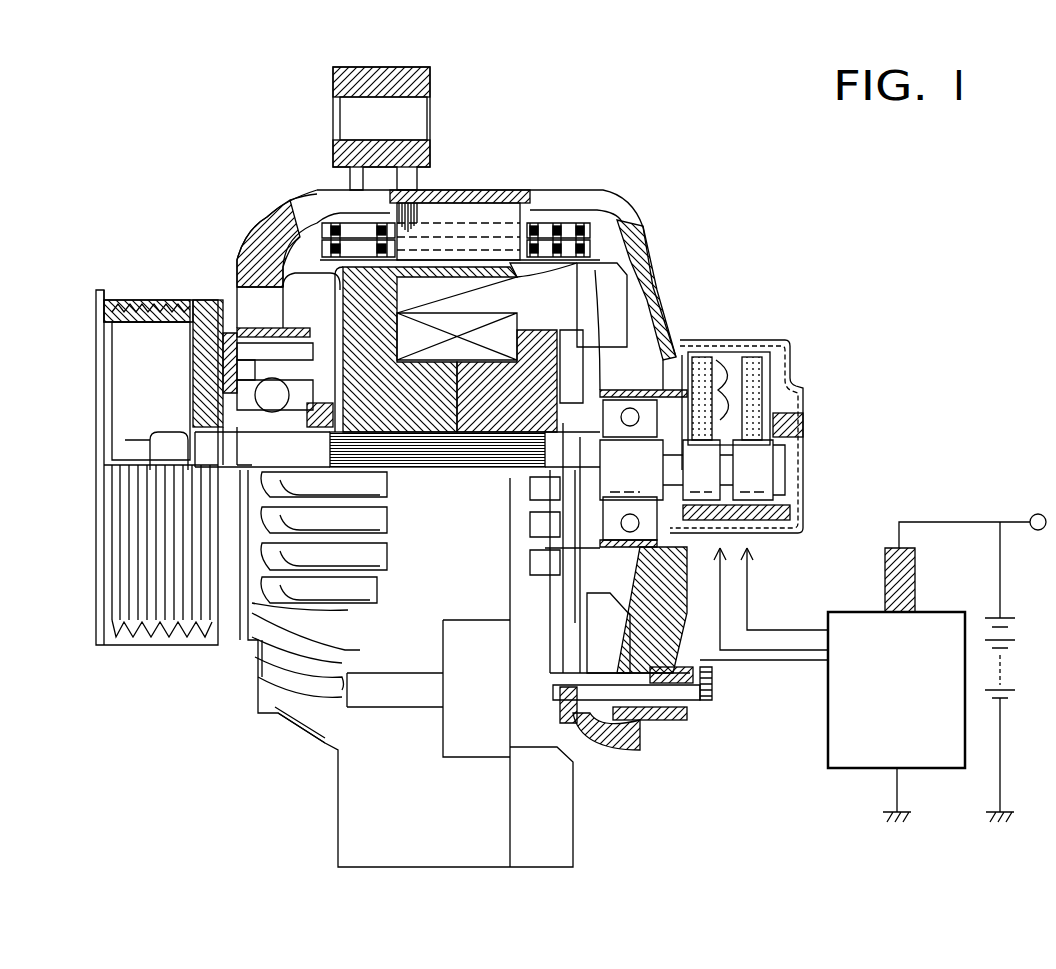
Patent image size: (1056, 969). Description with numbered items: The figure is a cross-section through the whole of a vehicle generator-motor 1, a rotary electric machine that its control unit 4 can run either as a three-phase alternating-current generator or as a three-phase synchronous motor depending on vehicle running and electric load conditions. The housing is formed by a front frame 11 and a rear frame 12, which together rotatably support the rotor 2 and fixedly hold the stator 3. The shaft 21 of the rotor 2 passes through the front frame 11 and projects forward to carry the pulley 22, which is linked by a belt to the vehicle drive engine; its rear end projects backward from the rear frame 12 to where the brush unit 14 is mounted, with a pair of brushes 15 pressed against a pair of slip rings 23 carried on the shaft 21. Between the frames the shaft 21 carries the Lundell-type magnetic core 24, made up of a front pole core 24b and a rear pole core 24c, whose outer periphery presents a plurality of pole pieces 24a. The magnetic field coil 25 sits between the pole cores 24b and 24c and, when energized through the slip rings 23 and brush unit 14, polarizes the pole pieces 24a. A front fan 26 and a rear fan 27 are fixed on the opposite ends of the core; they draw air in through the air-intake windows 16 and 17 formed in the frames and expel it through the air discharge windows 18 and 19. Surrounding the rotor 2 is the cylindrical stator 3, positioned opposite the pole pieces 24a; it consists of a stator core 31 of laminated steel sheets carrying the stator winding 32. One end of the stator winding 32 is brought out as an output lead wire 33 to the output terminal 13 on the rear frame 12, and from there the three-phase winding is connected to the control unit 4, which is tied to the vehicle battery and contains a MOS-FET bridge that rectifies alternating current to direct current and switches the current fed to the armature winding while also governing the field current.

The vehicle generator-motor 1 is at (591, 76).
The rotor 2 is at (295, 246).
The stator 3 is at (540, 206).
The control unit 4 is at (852, 762).
The front frame 11 is at (272, 217).
The rear frame 12 is at (653, 238).
The output terminal 13 is at (707, 700).
The brush unit 14 is at (782, 350).
The brushes 15 is at (760, 417).
The air-intake window 16 is at (330, 320).
The air-intake window 17 is at (648, 303).
The air discharge window 18 is at (297, 210).
The air discharge window 19 is at (637, 197).
The shaft 21 is at (215, 430).
The pulley 22 is at (100, 290).
The slip rings 23 is at (753, 457).
The Lundell-type magnetic core 24 is at (612, 270).
The pole pieces 24a is at (433, 283).
The front pole core 24b is at (253, 313).
The rear pole core 24c is at (560, 370).
The magnetic field coil 25 is at (460, 327).
The front fan 26 is at (280, 300).
The rear fan 27 is at (610, 323).
The stator core 31 is at (437, 213).
The stator winding 32 is at (317, 223).
The output lead wire 33 is at (680, 693).